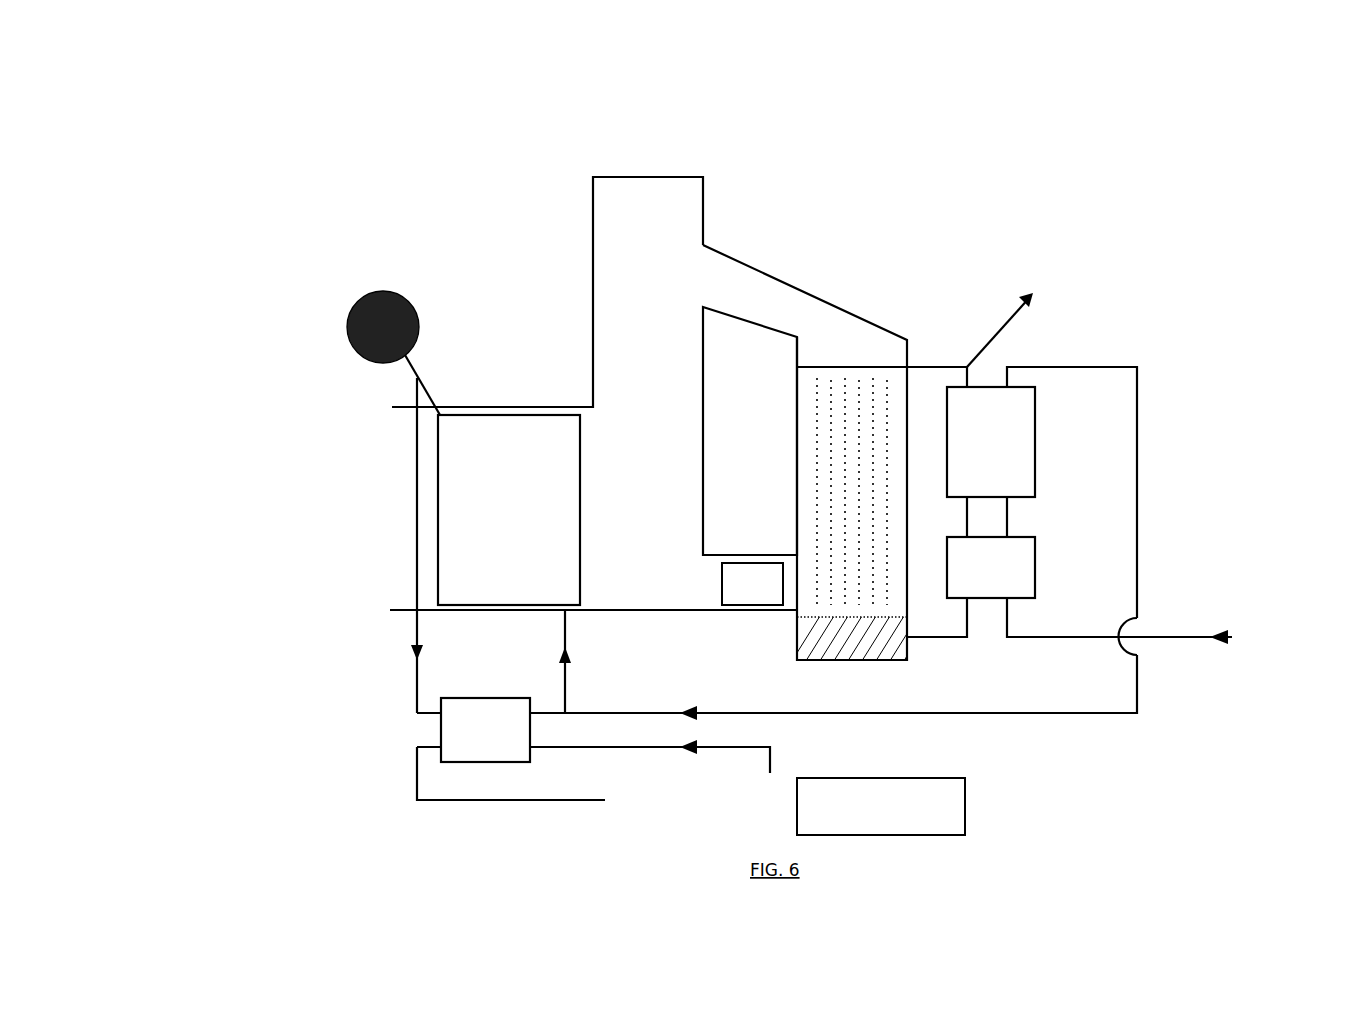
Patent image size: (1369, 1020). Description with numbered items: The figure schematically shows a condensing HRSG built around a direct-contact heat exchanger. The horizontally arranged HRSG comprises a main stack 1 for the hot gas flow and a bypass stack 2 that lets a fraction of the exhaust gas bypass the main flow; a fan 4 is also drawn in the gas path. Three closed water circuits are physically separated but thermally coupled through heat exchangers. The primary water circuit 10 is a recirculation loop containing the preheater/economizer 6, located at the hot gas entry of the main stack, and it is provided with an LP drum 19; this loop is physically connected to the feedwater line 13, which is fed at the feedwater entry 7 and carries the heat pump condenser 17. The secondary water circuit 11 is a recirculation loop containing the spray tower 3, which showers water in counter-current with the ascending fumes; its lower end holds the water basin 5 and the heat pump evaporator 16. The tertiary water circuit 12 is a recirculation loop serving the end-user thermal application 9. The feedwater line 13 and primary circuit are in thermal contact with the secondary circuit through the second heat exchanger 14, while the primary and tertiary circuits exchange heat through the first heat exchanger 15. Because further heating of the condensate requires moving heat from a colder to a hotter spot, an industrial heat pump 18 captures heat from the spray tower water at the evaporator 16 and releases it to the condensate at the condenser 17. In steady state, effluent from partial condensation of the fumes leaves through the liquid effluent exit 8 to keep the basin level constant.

The main stack 1 is at (592, 262).
The bypass stack 2 is at (804, 292).
The spray tower 3 is at (848, 455).
The fan 4 is at (745, 590).
The water basin 5 is at (875, 660).
The preheater/economizer 6 is at (509, 510).
The feedwater entry 7 is at (1180, 635).
The liquid effluent exit 8 is at (1013, 290).
The end-user thermal application 9 is at (797, 800).
The primary water circuit 10 is at (415, 508).
The secondary water circuit 11 is at (935, 258).
The tertiary water circuit 12 is at (413, 781).
The feedwater line 13 is at (975, 715).
The second heat exchanger 14 is at (1037, 578).
The first heat exchanger 15 is at (507, 665).
The heat pump evaporator 16 is at (1143, 414).
The heat pump condenser 17 is at (1143, 473).
The heat pump 18 is at (1037, 405).
The LP drum 19 is at (380, 290).